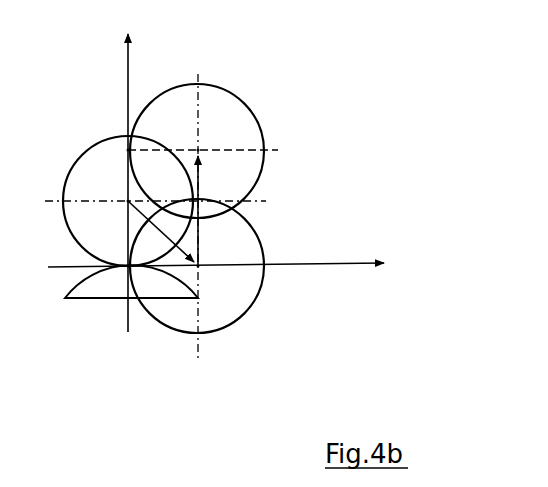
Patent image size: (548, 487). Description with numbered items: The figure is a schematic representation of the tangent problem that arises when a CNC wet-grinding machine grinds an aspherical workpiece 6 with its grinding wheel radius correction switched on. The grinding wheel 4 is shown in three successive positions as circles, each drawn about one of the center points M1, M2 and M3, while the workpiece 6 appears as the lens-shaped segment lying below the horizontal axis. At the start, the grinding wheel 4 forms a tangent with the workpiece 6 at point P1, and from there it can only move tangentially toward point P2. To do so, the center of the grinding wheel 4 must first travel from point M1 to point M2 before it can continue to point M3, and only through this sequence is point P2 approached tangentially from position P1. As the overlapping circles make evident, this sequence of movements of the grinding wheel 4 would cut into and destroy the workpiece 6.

The grinding wheel 4 is at (89, 134).
The workpiece 6 is at (102, 287).
The point M1 is at (146, 219).
The point M2 is at (212, 227).
The point M3 is at (212, 143).
The point P1 is at (118, 253).
The point P2 is at (140, 150).